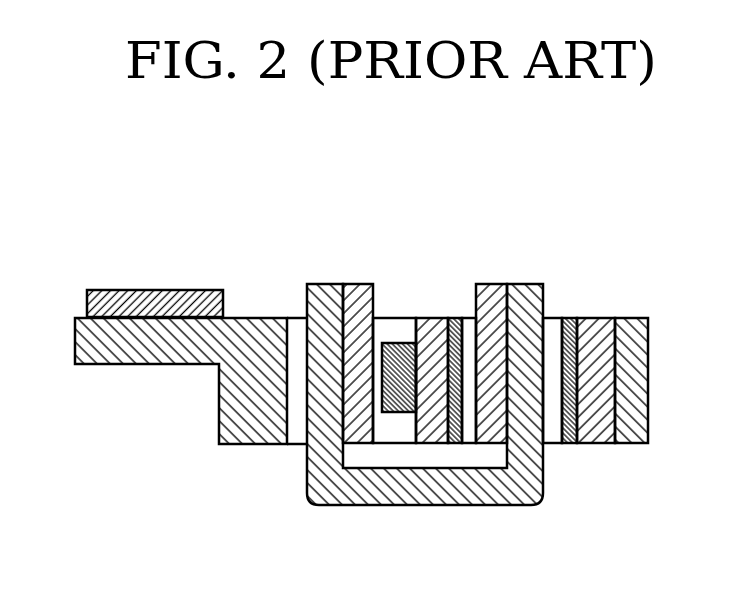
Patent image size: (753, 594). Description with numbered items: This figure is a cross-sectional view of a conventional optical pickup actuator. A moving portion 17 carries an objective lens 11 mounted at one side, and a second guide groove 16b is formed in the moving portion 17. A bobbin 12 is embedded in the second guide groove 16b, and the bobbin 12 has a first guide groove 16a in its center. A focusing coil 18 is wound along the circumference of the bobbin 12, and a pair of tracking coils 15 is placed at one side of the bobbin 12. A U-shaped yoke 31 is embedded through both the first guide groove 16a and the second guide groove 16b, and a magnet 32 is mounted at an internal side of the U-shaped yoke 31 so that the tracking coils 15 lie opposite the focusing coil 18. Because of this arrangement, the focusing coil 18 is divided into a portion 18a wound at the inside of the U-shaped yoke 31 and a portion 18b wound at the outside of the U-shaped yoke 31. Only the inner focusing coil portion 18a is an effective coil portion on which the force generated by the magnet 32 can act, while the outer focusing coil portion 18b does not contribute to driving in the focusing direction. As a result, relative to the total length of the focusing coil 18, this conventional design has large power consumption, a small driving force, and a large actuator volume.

The objective lens 11 is at (122, 300).
The bobbin 12 is at (562, 443).
The tracking coils 15 is at (392, 412).
The first guide groove 16a is at (557, 330).
The second guide groove 16b is at (384, 328).
The moving portion 17 is at (237, 406).
The focusing coil 18 is at (468, 175).
The focusing coil portion wound inside the yoke 18a is at (428, 325).
The focusing coil portion wound outside the yoke 18b is at (598, 325).
The U-shaped yoke 31 is at (532, 288).
The magnet 32 is at (492, 290).